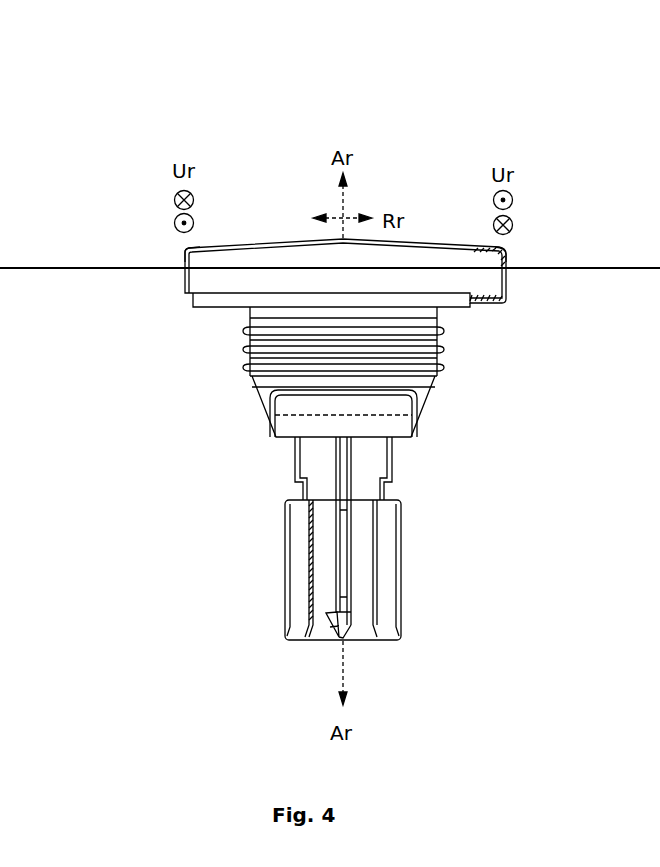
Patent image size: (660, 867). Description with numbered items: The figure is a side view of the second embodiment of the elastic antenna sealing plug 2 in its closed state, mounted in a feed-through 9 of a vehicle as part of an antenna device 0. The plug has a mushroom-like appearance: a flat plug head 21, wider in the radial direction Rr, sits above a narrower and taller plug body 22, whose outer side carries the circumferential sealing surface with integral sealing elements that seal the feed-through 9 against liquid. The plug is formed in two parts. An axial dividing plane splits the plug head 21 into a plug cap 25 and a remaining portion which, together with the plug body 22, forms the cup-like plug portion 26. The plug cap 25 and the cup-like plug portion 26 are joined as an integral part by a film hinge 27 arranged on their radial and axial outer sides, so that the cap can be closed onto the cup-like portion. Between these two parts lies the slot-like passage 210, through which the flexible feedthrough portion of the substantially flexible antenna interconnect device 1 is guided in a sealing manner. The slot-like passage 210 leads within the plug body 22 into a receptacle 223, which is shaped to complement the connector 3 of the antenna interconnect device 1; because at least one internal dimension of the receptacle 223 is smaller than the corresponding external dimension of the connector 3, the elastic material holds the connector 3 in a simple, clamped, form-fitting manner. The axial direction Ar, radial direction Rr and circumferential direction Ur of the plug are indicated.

The antenna device 0 is at (109, 99).
The antenna interconnect device 1 is at (652, 288).
The antenna sealing plug 2 is at (375, 472).
The plug head 21 is at (365, 220).
The plug cap 25 is at (228, 258).
The cup-like plug portion 26 is at (417, 280).
The slot-like passage 210 is at (182, 258).
The plug body 22 is at (495, 307).
The film hinge 27 is at (508, 264).
The feed-through 9 is at (249, 444).
The receptacle 223 is at (360, 407).
The connector 3 is at (267, 634).